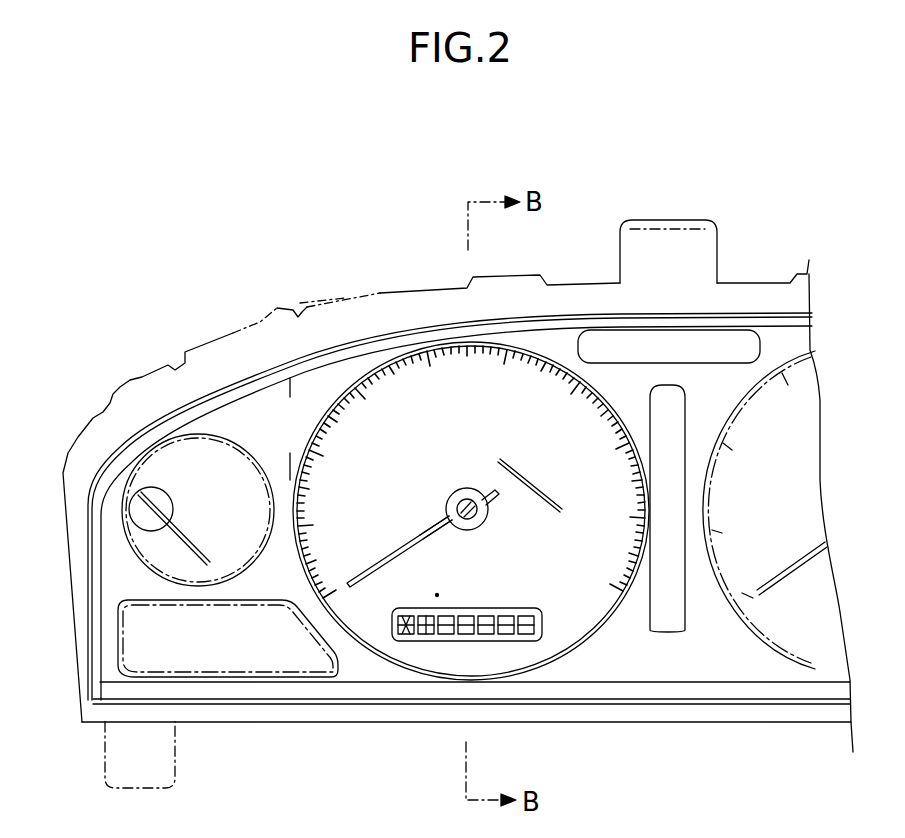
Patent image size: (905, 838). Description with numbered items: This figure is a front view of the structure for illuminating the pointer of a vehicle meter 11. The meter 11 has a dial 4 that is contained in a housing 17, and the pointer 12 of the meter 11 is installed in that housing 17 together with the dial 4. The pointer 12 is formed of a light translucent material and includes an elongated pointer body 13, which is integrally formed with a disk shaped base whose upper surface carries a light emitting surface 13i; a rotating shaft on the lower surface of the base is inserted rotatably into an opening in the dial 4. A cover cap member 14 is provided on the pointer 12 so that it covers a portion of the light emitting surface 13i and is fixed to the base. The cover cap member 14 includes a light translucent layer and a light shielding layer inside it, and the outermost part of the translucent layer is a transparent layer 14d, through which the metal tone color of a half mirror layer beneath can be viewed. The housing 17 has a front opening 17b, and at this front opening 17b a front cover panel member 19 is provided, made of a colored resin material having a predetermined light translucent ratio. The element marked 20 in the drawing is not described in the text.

The meter 11 is at (762, 283).
The pointer 12 is at (390, 192).
The pointer body 13 is at (408, 537).
The light emitting surface 13i is at (437, 538).
The cover cap member 14 is at (460, 484).
The transparent layer 14d is at (473, 530).
The dial 4 is at (535, 463).
The housing 17 is at (728, 283).
The front opening 17b is at (673, 698).
The front cover panel member 19 is at (542, 657).
The light emitting portion 20 is at (427, 588).